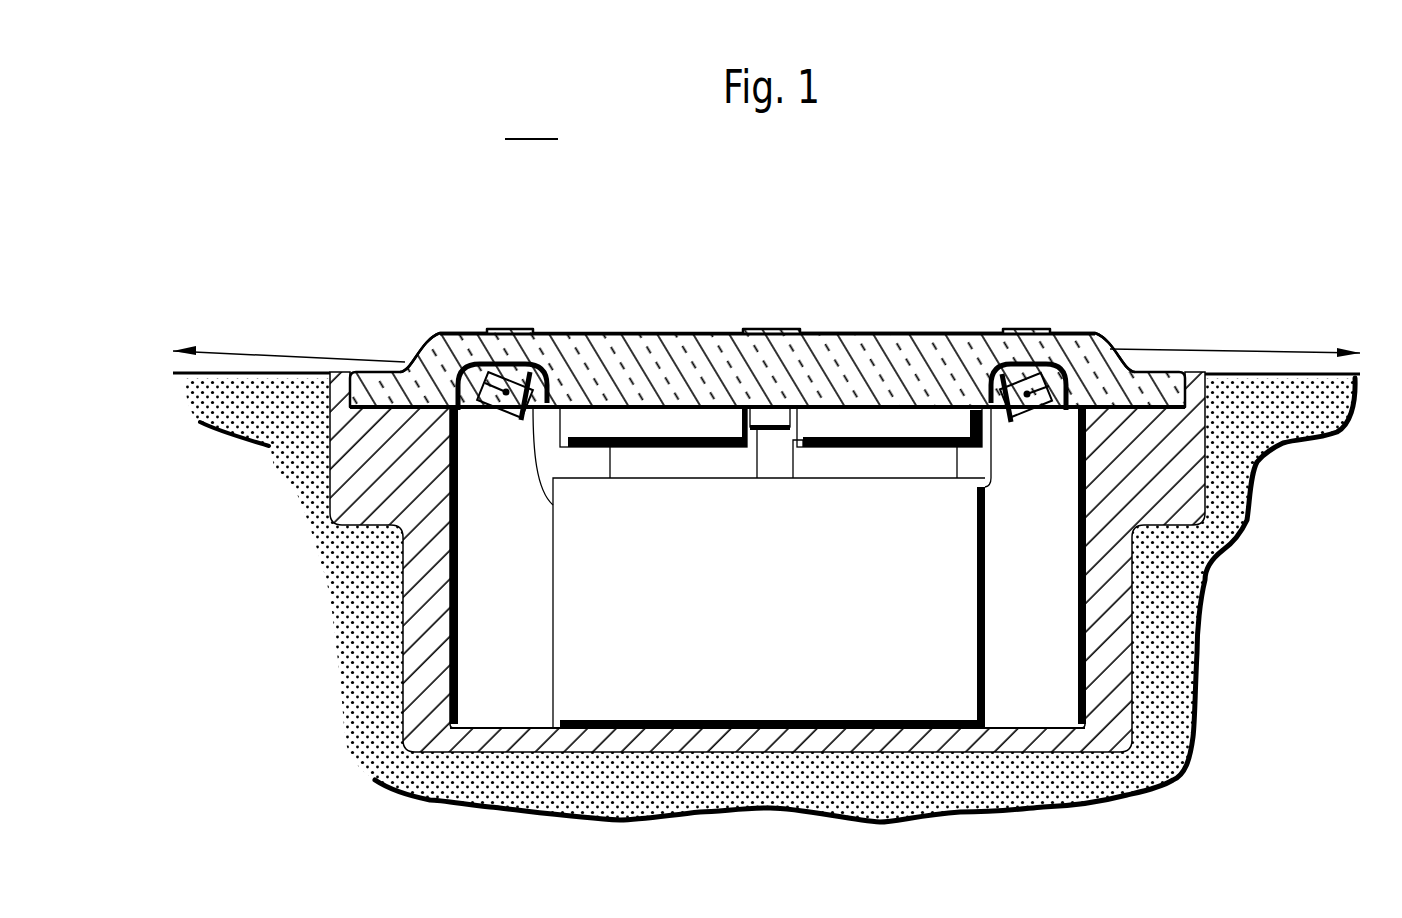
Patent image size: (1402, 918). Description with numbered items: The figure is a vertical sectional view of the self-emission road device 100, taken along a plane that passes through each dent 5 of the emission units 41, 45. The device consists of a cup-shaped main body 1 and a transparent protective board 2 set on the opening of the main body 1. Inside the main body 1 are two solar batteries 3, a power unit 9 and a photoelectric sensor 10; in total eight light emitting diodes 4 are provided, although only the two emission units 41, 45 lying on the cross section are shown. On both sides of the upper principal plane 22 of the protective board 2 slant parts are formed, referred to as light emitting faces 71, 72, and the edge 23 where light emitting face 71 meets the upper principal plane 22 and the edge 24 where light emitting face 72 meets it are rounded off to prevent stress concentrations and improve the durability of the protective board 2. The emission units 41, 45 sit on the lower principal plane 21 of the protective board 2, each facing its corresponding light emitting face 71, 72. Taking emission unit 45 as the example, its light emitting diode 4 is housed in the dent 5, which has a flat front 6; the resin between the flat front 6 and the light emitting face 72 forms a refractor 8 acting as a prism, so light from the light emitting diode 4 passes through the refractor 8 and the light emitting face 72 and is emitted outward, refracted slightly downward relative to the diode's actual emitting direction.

The self-emission road device 100 is at (531, 120).
The main body 1 is at (369, 474).
The protective board 2 is at (765, 370).
The upper principal plane 22 is at (857, 360).
The edge 23 is at (435, 318).
The edge 24 is at (1108, 318).
The light emitting face 71 is at (428, 340).
The light emitting face 72 is at (1103, 345).
The refractor 8 is at (447, 360).
The flat front 6 is at (483, 365).
The light emitting diode 4 is at (522, 375).
The dent 5 is at (512, 388).
The solar battery 3 is at (648, 427).
The photoelectric sensor 10 is at (767, 417).
The power unit 9 is at (848, 627).
The lower principal plane 21 is at (537, 432).
The emission unit 41 is at (500, 430).
The emission unit 45 is at (1037, 427).